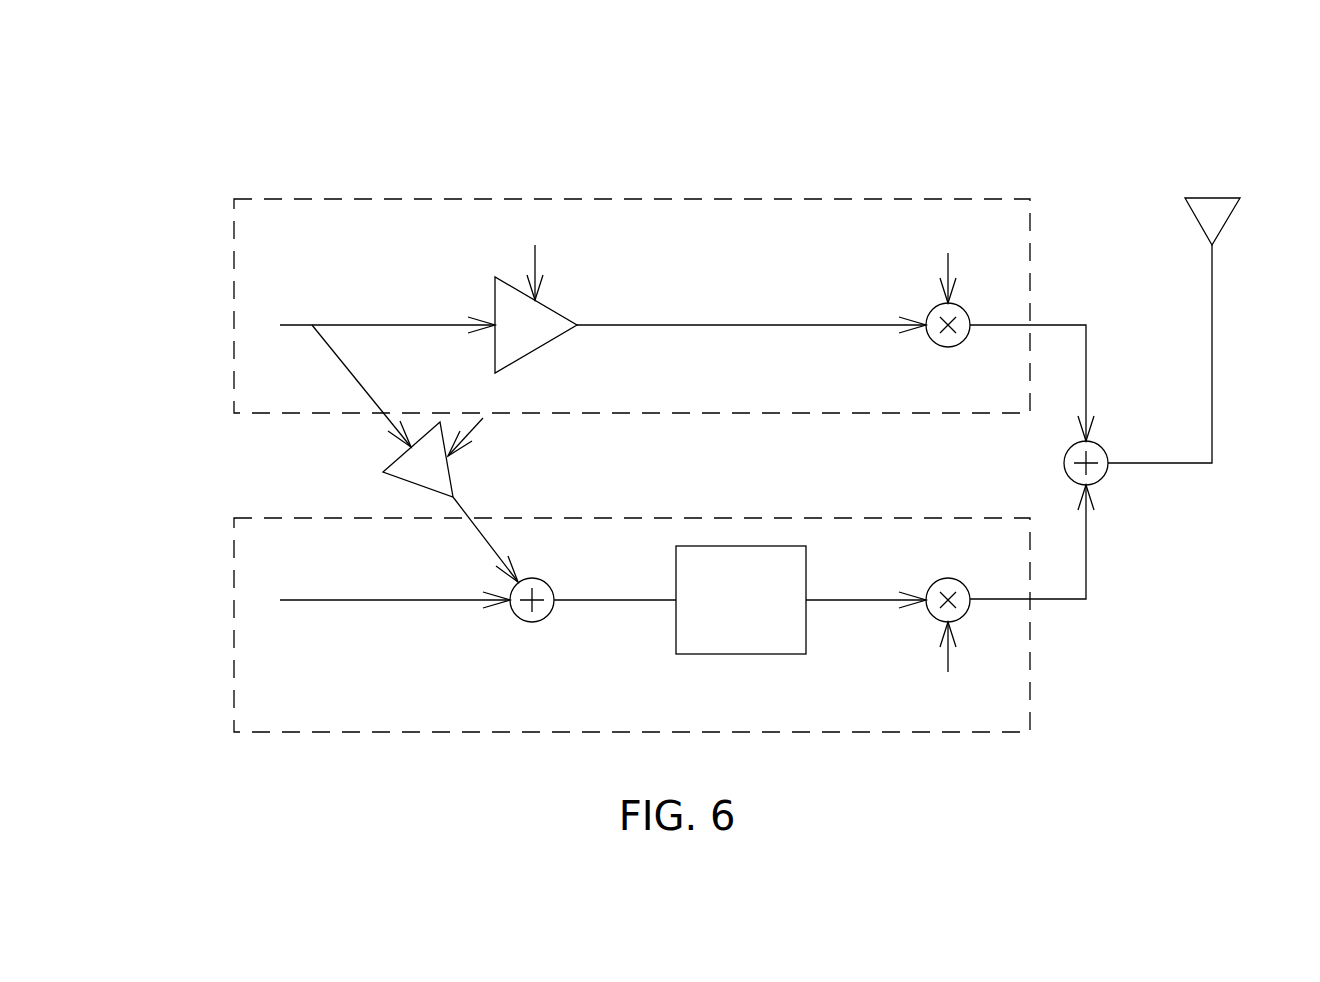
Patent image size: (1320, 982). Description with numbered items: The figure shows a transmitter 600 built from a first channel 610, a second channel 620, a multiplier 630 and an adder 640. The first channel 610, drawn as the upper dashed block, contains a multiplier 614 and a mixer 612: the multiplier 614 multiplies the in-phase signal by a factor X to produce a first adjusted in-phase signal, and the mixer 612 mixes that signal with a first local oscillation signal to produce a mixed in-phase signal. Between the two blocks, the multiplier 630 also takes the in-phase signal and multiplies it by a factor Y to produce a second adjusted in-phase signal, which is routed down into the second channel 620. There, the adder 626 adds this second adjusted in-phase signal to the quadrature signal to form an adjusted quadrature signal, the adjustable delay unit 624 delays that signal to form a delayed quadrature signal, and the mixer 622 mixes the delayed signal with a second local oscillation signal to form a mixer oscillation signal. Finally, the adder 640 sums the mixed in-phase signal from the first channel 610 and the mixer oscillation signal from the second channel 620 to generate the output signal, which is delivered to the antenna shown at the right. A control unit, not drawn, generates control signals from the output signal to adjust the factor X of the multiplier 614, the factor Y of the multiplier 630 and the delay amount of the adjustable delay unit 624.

The transmitter 600 is at (1082, 120).
The first channel 610 is at (234, 240).
The mixer 612 is at (962, 340).
The multiplier 614 is at (540, 350).
The second channel 620 is at (234, 560).
The mixer 622 is at (963, 584).
The adjustable delay unit 624 is at (740, 654).
The adder 626 is at (548, 617).
The multiplier 630 is at (405, 477).
The adder 640 is at (1102, 480).